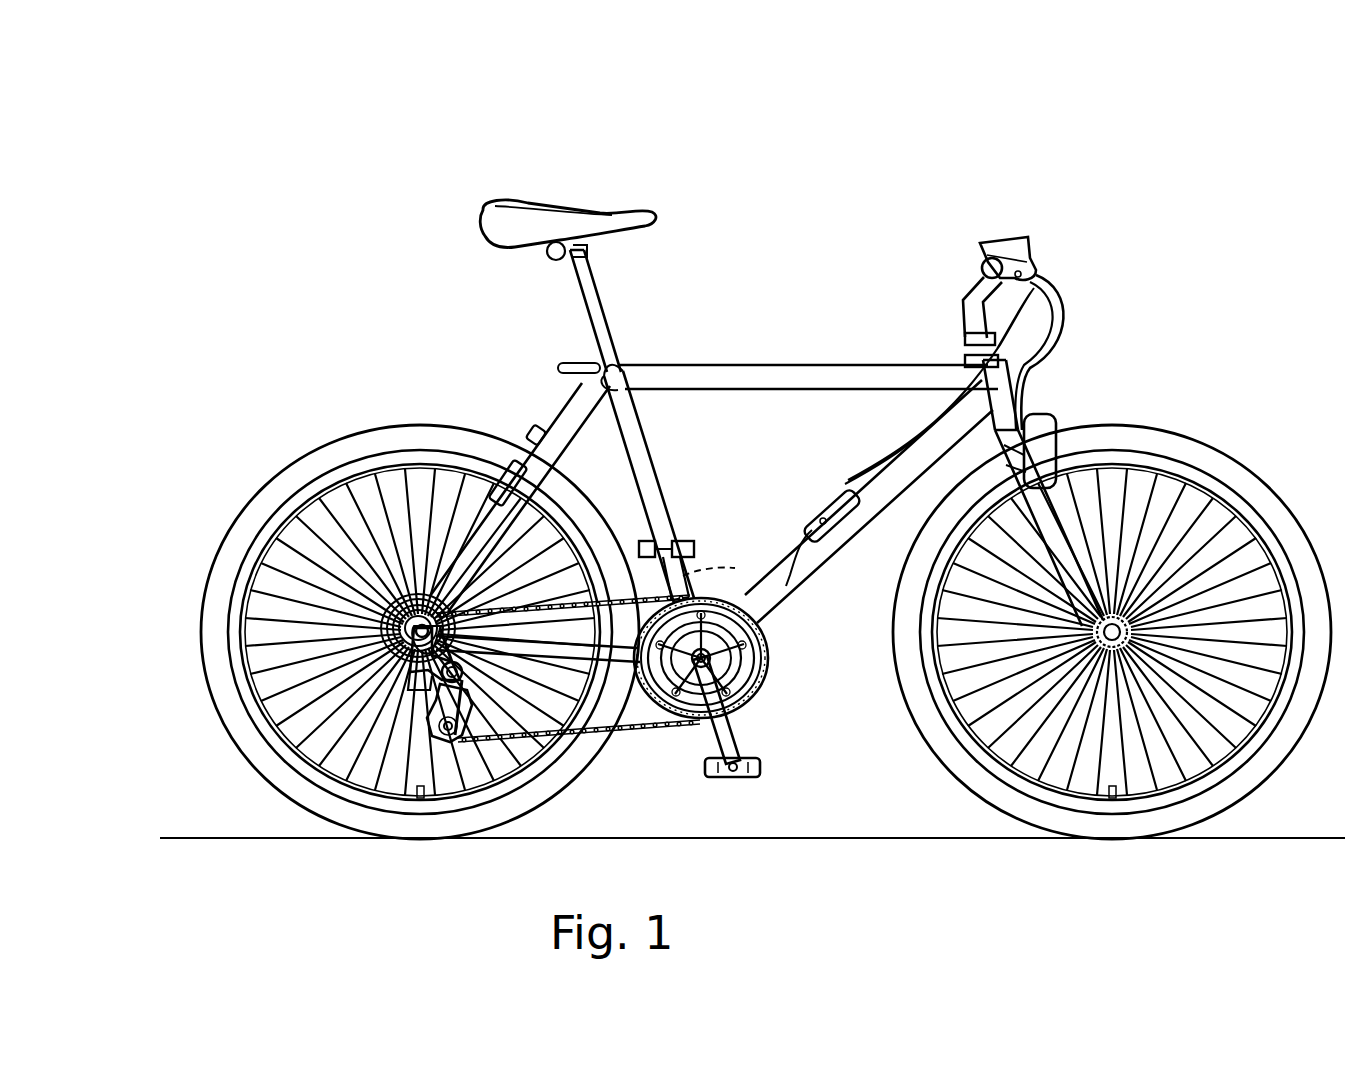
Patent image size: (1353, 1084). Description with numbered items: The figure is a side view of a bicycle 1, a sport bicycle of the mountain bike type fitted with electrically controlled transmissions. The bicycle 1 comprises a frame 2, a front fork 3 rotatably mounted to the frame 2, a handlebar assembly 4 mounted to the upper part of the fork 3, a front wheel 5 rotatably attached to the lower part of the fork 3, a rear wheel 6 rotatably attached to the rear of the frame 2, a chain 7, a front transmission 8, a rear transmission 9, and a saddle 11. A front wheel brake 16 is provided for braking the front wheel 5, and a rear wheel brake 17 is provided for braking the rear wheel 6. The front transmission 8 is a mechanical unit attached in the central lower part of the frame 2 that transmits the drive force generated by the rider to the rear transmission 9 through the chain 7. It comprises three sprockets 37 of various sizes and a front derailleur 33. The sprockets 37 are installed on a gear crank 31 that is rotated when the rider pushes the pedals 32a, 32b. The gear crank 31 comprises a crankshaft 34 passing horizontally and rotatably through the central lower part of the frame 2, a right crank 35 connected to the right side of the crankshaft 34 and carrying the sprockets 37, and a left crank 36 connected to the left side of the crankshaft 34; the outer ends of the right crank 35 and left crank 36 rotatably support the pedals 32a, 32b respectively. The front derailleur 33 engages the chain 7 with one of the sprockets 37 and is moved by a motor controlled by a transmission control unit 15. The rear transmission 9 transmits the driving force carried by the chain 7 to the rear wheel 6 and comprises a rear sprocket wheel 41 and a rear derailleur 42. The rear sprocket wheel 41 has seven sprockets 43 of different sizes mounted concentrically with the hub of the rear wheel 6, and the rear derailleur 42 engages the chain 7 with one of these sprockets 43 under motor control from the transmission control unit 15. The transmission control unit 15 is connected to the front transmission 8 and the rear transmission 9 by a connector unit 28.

The bicycle 1 is at (885, 238).
The frame 2 is at (803, 362).
The front fork 3 is at (1040, 400).
The handlebar assembly 4 is at (1046, 247).
The front wheel 5 is at (1258, 492).
The rear wheel 6 is at (385, 442).
The chain 7 is at (622, 760).
The front transmission 8 is at (776, 710).
The rear transmission 9 is at (395, 648).
The saddle 11 is at (612, 212).
The transmission control unit 15 is at (1006, 236).
The front wheel brake 16 is at (1042, 424).
The rear wheel brake 17 is at (540, 432).
The connector unit 28 is at (834, 490).
The gear crank 31 is at (706, 738).
The pedal 32a is at (758, 766).
The pedal 32b is at (690, 540).
The front derailleur 33 is at (662, 540).
The crankshaft 34 is at (768, 660).
The right crank 35 is at (735, 748).
The left crank 36 is at (726, 569).
The sprockets 37 is at (664, 738).
The rear sprocket wheel 41 is at (405, 700).
The rear derailleur 42 is at (430, 705).
The sprockets 43 is at (400, 632).